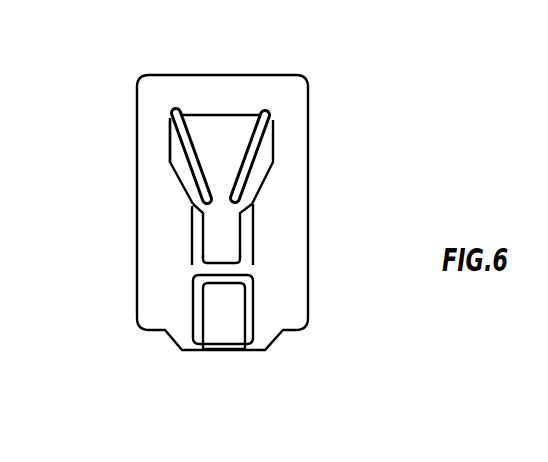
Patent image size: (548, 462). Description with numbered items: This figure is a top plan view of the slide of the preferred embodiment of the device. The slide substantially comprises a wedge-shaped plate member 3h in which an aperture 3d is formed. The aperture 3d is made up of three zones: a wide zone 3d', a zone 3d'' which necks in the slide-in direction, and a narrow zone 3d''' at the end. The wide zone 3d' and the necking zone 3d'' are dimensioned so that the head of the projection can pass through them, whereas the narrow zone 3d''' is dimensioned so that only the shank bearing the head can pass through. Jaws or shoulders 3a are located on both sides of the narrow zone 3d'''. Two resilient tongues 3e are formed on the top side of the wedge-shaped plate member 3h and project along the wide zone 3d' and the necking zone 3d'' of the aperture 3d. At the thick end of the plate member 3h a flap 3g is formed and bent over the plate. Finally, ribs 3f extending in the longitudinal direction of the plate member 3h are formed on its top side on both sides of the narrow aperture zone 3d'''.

The wedge-shaped plate member 3h is at (285, 107).
The aperture 3d is at (221, 105).
The wide zone 3d' is at (109, 131).
The necking zone 3d'' is at (119, 177).
The narrow zone 3d''' is at (142, 254).
The jaws or shoulders 3a is at (360, 208).
The ribs 3f is at (350, 248).
The resilient tongues 3e is at (198, 160).
The flap 3g is at (220, 318).